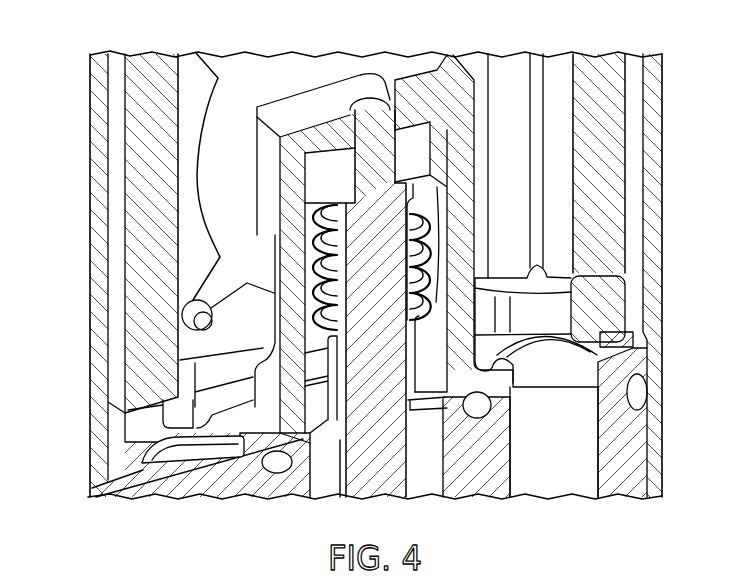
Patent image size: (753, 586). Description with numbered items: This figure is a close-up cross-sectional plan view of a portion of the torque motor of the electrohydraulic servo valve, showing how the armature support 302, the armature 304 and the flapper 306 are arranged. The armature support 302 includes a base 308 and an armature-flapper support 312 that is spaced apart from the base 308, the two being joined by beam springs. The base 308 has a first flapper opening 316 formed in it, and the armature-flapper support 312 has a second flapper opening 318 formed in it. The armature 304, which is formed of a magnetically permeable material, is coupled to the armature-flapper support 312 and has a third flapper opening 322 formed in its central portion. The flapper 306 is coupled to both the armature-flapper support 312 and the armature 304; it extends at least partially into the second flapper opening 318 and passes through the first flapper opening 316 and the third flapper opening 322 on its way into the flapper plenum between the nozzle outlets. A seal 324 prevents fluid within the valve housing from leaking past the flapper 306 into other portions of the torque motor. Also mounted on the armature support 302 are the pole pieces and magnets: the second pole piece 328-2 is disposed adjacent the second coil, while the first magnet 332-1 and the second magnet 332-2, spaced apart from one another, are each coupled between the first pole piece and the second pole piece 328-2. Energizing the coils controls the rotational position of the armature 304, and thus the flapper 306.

The armature support 302 is at (644, 339).
The armature 304 is at (333, 155).
The flapper 306 is at (367, 263).
The base 308 is at (124, 481).
The armature-flapper support 312 is at (436, 74).
The first flapper opening 316 is at (432, 395).
The second flapper opening 318 is at (387, 100).
The third flapper opening 322 is at (362, 173).
The seal 324 is at (450, 228).
The second pole piece 328-2 is at (617, 302).
The first magnet 332-1 is at (150, 183).
The second magnet 332-2 is at (617, 111).